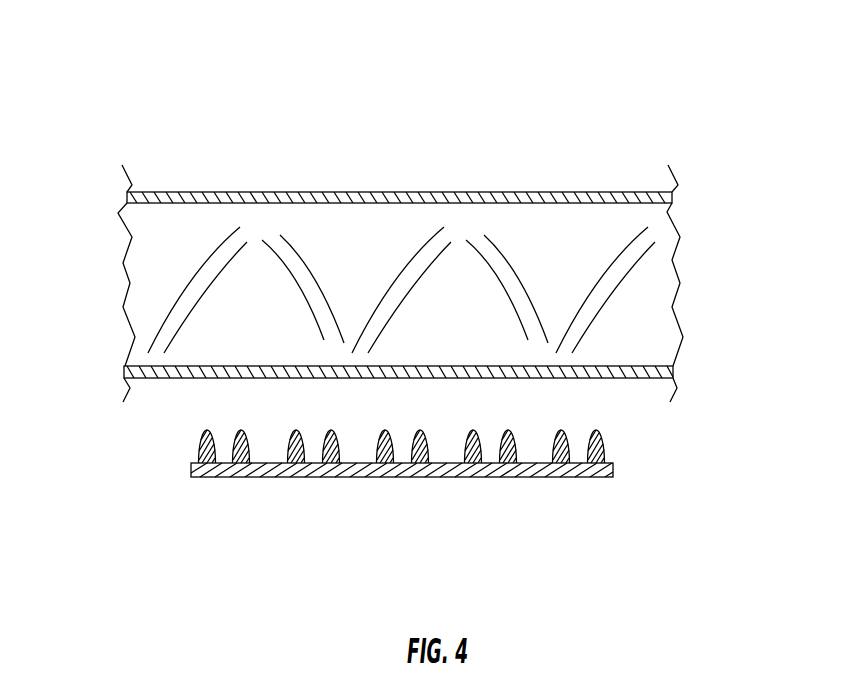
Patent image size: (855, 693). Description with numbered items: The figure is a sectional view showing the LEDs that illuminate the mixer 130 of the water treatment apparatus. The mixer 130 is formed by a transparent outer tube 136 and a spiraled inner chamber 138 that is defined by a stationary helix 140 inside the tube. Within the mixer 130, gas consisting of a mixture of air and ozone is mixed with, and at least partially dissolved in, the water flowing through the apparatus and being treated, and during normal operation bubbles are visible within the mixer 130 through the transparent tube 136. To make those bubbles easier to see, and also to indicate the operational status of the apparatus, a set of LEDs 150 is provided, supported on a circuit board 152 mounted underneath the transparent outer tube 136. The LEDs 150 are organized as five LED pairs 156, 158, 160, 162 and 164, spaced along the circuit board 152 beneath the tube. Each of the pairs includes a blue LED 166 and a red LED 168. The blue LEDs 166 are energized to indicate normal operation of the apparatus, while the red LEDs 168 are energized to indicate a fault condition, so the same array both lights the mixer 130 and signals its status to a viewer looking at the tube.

The mixer 130 is at (540, 106).
The transparent outer tube 136 is at (560, 192).
The spiraled inner chamber 138 is at (188, 240).
The stationary helix 140 is at (297, 270).
The LEDs 150 is at (82, 437).
The circuit board 152 is at (392, 477).
The first LED pair 156 is at (212, 409).
The second LED pair 158 is at (301, 409).
The third LED pair 160 is at (391, 409).
The fourth LED pair 162 is at (492, 408).
The fifth LED pair 164 is at (589, 408).
The blue LED 166 is at (198, 448).
The red LED 168 is at (427, 447).